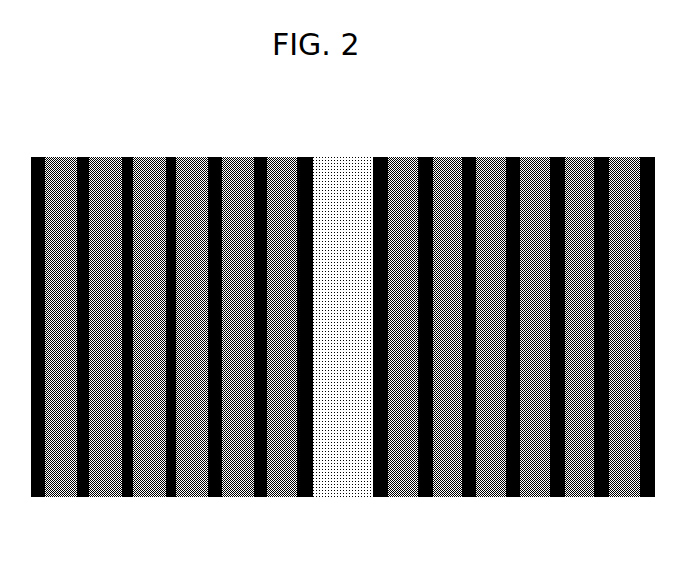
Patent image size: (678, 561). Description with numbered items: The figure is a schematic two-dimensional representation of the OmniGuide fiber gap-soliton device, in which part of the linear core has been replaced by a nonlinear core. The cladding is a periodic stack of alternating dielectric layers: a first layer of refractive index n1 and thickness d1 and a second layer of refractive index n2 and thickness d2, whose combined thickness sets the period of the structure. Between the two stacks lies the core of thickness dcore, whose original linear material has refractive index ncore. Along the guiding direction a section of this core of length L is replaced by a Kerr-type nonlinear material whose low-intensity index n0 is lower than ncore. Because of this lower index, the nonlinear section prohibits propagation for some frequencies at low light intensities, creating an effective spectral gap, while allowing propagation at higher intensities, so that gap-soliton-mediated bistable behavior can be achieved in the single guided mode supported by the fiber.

The refractive index of first dielectric layer n1 is at (59, 150).
The refractive index of second dielectric layer n2 is at (171, 150).
The refractive index of linear core ncore is at (339, 150).
The low-intensity refractive index of nonlinear core n0 is at (343, 327).
The length of nonlinear core L is at (322, 283).
The thickness of first dielectric layer d1 is at (15, 511).
The thickness of second dielectric layer d2 is at (137, 511).
The core thickness dcore is at (282, 510).